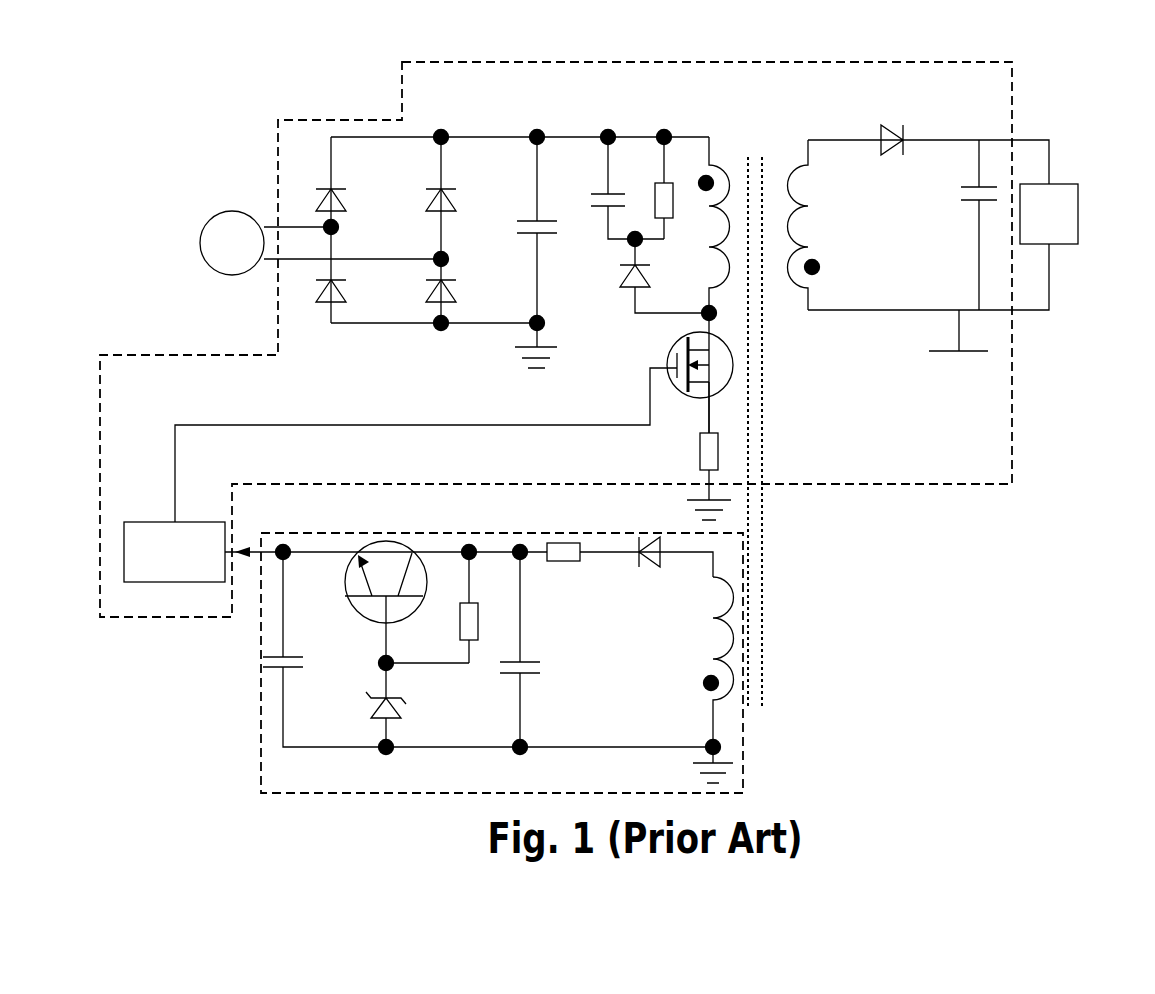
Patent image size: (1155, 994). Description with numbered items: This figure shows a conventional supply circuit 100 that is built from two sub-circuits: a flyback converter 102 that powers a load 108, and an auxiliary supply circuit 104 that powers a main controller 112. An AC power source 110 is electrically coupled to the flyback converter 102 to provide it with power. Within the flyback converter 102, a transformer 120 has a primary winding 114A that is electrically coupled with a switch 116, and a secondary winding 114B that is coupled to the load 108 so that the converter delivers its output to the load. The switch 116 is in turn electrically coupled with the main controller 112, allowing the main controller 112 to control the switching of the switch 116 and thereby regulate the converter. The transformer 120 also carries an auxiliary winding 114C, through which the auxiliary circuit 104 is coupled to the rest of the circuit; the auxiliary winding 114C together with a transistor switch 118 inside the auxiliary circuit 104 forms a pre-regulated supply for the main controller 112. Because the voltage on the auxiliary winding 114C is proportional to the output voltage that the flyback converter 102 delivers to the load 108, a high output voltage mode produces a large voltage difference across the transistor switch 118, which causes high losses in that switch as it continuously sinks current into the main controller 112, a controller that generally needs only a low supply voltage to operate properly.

The power supply system 100 is at (1150, 86).
The power conversion stage 102 is at (320, 107).
The auxiliary power supply circuit 104 is at (493, 644).
The load 108 is at (1078, 214).
The AC source 110 is at (225, 212).
The main controller 112 is at (150, 522).
The primary winding 114A is at (728, 142).
The secondary winding 114B is at (813, 275).
The auxiliary winding 114C is at (735, 637).
The power switch (MOSFET) 116 is at (728, 383).
The transistor Q1 118 is at (424, 535).
The transformer 120 is at (784, 118).